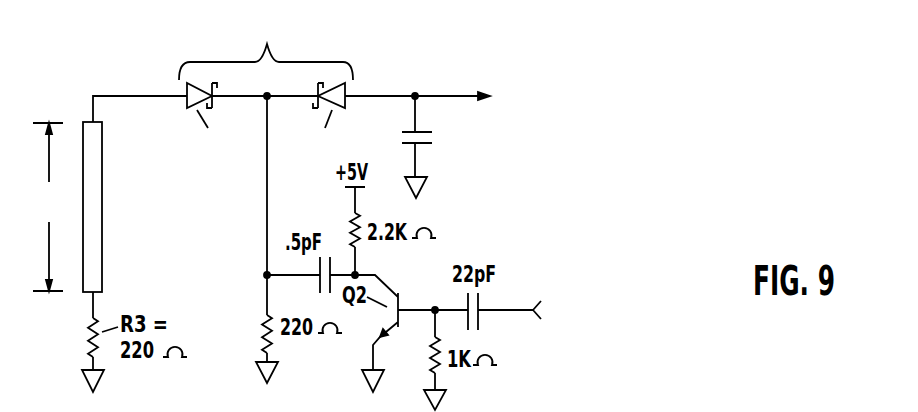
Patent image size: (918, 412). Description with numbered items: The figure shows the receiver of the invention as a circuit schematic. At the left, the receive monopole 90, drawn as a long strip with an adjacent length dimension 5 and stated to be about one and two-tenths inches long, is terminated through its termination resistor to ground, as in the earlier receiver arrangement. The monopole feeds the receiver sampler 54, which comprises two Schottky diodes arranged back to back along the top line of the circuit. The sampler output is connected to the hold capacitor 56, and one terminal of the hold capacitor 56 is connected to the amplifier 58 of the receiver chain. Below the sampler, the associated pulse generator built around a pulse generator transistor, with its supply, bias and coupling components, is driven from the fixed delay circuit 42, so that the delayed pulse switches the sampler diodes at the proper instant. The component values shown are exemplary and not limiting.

The sampler 54 is at (266, 87).
The receive monopole 90 is at (97, 213).
The hold capacitor 56 is at (427, 130).
The amplifier 58 is at (499, 98).
The fixed delay circuit 42 is at (615, 315).
The length l5 5 is at (48, 207).